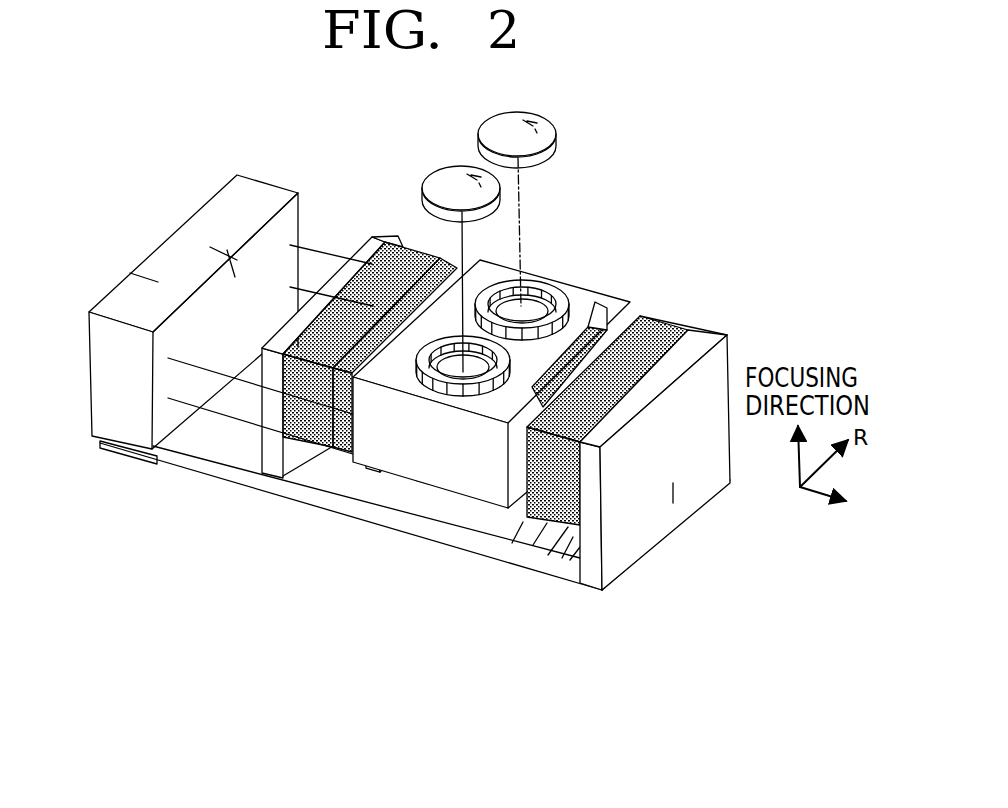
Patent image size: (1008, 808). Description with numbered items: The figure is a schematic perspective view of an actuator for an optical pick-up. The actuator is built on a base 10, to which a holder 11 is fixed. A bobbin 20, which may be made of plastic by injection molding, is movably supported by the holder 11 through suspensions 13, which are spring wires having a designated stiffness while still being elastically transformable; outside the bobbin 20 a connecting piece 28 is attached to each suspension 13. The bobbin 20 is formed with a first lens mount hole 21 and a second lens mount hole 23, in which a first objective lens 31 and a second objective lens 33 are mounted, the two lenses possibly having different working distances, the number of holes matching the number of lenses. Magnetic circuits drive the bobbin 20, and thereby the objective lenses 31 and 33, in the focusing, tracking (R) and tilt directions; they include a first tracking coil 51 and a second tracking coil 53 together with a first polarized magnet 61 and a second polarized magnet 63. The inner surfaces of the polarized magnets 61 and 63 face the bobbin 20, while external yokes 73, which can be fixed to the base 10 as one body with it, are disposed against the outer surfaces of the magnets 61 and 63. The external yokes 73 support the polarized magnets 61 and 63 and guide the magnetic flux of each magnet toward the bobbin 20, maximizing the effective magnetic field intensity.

The base 10 is at (228, 476).
The holder 11 is at (165, 250).
The suspensions 13 is at (157, 445).
The bobbin 20 is at (593, 310).
The first lens mount hole 21 is at (557, 290).
The second lens mount hole 23 is at (448, 330).
The connecting piece 28 is at (407, 493).
The first objective lens 31 is at (557, 120).
The second objective lens 33 is at (451, 165).
The first tracking coil 51 is at (607, 309).
The second tracking coil 53 is at (383, 250).
The first polarized magnet 61 is at (691, 358).
The second polarized magnet 63 is at (418, 268).
The external yokes 73 is at (597, 514).